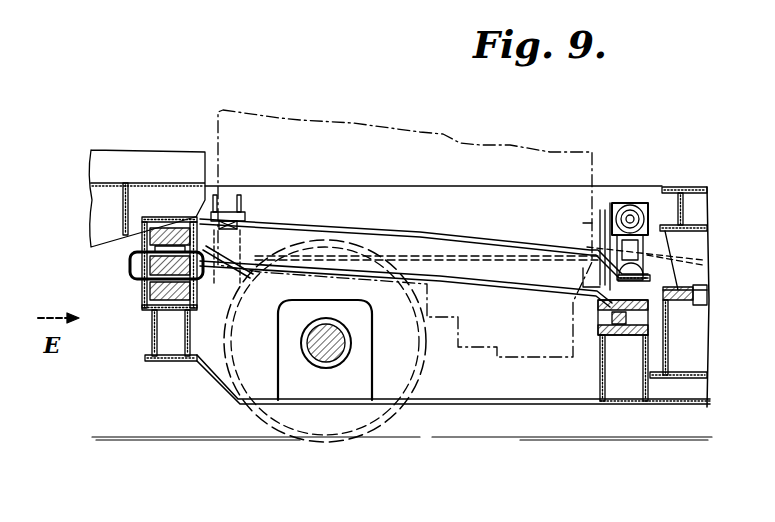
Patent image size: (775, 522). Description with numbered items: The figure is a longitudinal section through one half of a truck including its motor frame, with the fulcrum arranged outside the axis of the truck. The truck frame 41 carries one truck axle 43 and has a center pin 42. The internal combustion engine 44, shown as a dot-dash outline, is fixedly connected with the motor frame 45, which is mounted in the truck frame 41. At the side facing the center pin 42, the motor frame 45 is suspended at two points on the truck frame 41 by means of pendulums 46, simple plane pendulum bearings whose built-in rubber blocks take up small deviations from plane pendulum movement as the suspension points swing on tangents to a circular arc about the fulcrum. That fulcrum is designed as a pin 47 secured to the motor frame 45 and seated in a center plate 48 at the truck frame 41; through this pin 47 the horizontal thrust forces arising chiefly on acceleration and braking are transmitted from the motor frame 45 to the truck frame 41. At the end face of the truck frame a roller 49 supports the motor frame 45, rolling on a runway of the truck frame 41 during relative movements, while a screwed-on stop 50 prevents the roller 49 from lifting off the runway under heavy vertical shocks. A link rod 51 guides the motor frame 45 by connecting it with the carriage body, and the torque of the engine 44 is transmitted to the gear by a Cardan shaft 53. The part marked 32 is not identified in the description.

The housing 32 is at (147, 199).
The truck frame 41 is at (197, 353).
The center pin of the truck 42 is at (692, 253).
The truck axle 43 is at (318, 358).
The internal combustion engine 44 is at (362, 140).
The motor frame 45 is at (557, 268).
The pendulums 46 is at (620, 207).
The pin 47 is at (660, 318).
The center plate 48 is at (650, 330).
The roller 49 is at (165, 313).
The screwed-on stop 50 is at (142, 303).
The link rod 51 is at (243, 208).
The Cardan shaft 53 is at (702, 268).